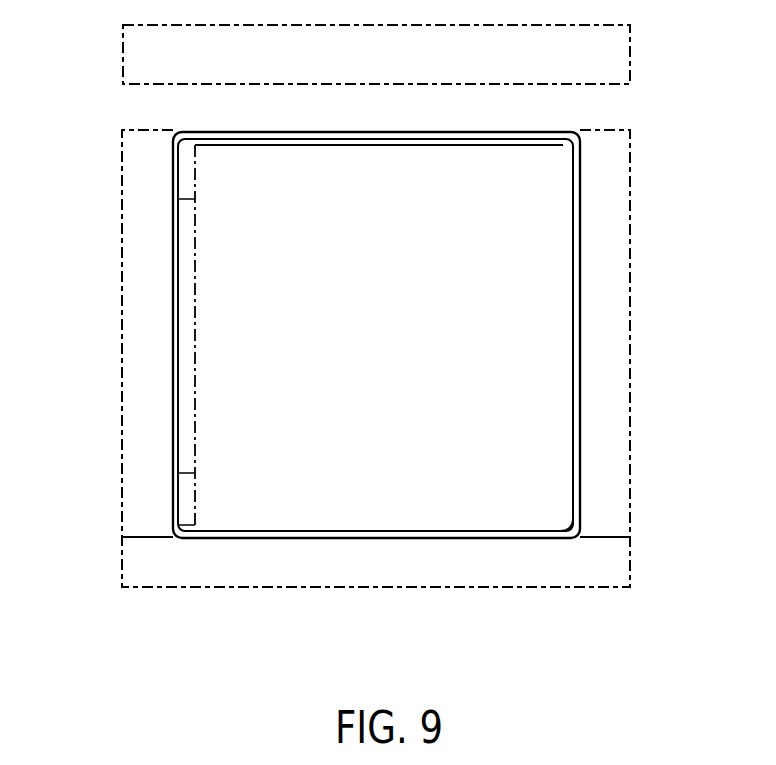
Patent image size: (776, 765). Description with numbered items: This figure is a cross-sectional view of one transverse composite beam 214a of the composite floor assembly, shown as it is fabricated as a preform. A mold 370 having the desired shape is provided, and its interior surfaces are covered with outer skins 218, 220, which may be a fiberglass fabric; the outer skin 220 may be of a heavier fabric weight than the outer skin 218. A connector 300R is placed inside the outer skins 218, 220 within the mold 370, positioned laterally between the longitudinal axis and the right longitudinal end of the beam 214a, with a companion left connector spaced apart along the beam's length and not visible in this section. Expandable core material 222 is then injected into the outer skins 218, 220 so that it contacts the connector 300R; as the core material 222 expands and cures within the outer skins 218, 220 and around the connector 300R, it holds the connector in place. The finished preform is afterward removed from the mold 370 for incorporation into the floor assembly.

The outer skin 220 is at (275, 129).
The outer skin 218 is at (581, 251).
The connector 300R is at (198, 338).
The mold 370 is at (632, 357).
The expandable core material 222 is at (420, 405).
The transverse beam 214a is at (574, 533).